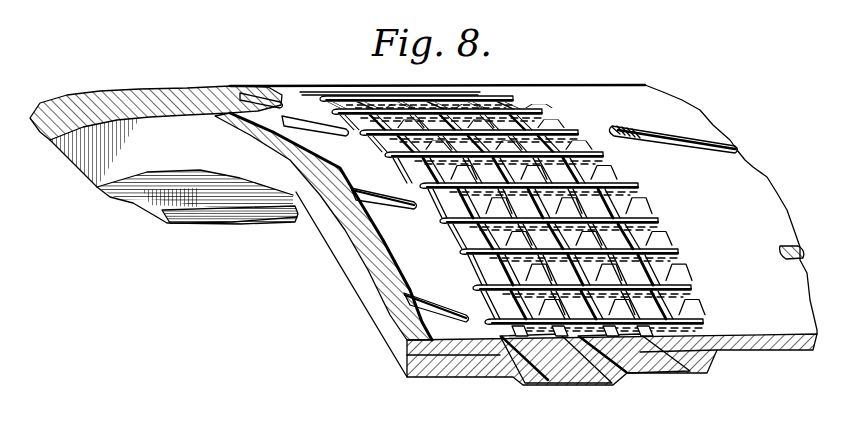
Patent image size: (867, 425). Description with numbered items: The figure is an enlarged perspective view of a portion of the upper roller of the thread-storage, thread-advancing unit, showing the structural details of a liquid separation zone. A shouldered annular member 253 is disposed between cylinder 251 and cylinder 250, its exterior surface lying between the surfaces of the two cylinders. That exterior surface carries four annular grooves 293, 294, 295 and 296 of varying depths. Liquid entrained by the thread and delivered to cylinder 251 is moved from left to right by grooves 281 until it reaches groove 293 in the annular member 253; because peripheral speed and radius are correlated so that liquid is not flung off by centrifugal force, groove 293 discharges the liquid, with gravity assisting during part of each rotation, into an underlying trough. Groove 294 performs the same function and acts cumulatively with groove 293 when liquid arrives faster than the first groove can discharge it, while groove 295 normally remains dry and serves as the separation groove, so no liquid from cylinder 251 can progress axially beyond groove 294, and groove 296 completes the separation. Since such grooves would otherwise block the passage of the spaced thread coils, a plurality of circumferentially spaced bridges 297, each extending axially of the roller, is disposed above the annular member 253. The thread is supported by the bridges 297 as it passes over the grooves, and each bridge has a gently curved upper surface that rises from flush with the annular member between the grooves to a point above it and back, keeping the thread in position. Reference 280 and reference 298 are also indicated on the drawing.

The cylinder 250 is at (763, 352).
The cylinder 251 is at (364, 234).
The shouldered annular member 253 is at (550, 378).
The end fin 280 is at (707, 143).
The grooves 281 is at (410, 207).
The annular groove 293 is at (487, 378).
The annular groove 294 is at (513, 368).
The annular groove 295 is at (577, 354).
The annular groove 296 is at (604, 364).
The bridges 297 is at (648, 214).
The plate supports 298 is at (688, 290).